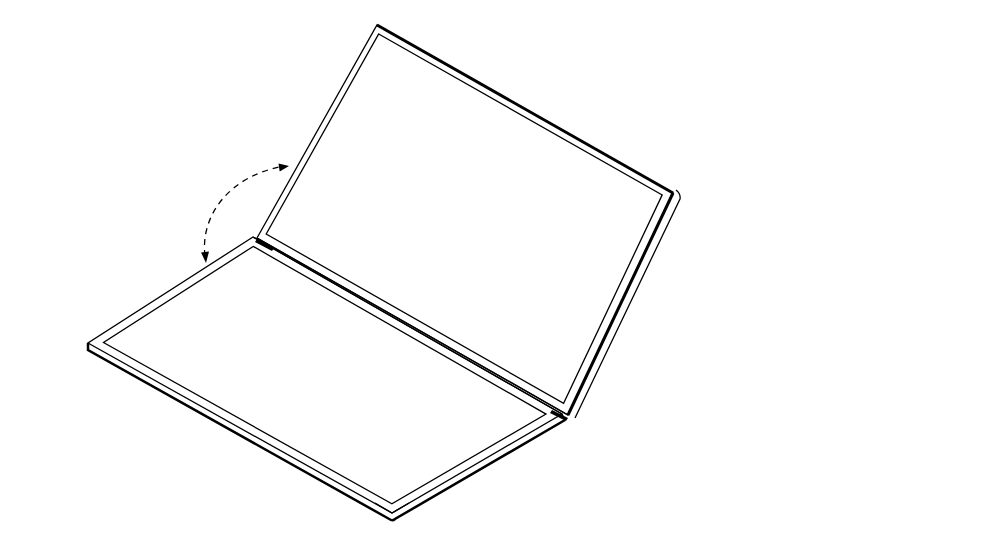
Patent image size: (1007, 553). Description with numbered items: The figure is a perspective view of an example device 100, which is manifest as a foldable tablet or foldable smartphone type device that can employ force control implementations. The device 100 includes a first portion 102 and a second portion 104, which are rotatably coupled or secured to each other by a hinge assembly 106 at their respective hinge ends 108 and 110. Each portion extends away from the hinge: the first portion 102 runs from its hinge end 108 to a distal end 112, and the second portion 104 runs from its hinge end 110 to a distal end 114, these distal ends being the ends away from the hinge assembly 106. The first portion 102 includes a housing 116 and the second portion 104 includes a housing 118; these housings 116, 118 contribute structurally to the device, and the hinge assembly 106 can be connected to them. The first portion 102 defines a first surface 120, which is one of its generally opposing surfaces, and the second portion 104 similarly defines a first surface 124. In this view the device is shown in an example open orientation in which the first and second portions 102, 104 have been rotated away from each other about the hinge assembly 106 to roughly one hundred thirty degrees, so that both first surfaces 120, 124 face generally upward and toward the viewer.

The device 100 is at (563, 50).
The first portion 102 is at (573, 130).
The second portion 104 is at (168, 409).
The hinge assembly 106 is at (575, 428).
The hinge end 108 is at (570, 413).
The hinge end 110 is at (567, 424).
The distal end 112 is at (677, 195).
The distal end 114 is at (401, 518).
The housing 116 is at (321, 108).
The housing 118 is at (187, 278).
The first surface 120 is at (565, 225).
The first surface 124 is at (410, 391).